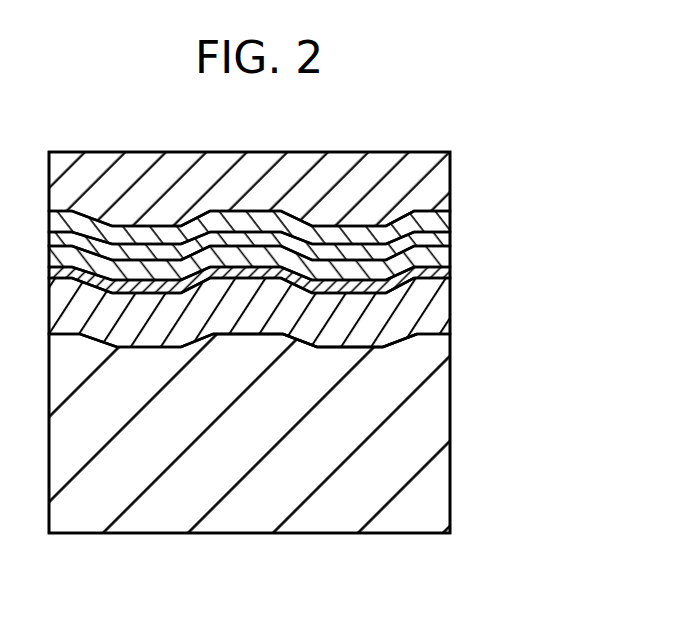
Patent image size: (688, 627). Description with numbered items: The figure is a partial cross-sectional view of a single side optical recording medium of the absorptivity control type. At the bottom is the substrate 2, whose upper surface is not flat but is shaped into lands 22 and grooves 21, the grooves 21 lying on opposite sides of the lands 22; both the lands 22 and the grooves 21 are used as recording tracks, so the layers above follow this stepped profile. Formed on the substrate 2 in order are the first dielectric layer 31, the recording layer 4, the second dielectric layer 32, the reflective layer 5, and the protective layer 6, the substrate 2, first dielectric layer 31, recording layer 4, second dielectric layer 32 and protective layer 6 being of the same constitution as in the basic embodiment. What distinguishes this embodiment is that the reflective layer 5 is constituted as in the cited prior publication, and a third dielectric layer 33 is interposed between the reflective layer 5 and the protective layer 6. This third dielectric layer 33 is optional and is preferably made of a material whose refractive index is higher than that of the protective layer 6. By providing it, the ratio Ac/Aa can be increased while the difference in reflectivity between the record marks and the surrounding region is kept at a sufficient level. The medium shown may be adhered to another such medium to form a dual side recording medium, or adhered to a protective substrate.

The substrate 2 is at (443, 405).
The groove 21 is at (340, 348).
The land 22 is at (252, 335).
The first dielectric layer 31 is at (450, 312).
The recording layer 4 is at (450, 272).
The second dielectric layer 32 is at (450, 257).
The reflective layer 5 is at (450, 237).
The third dielectric layer 33 is at (450, 218).
The protective layer 6 is at (450, 180).